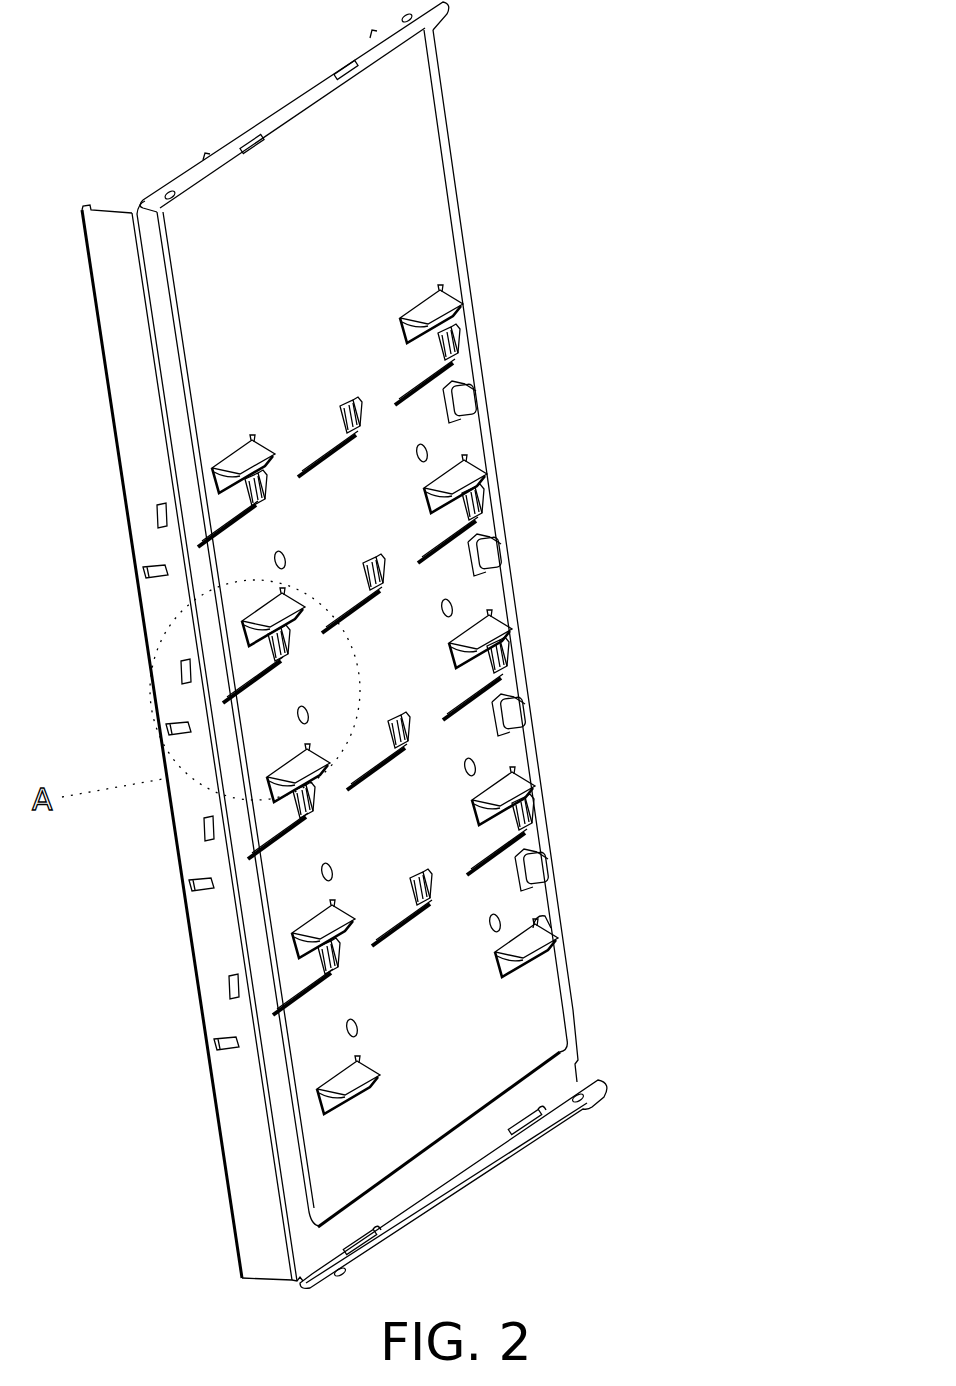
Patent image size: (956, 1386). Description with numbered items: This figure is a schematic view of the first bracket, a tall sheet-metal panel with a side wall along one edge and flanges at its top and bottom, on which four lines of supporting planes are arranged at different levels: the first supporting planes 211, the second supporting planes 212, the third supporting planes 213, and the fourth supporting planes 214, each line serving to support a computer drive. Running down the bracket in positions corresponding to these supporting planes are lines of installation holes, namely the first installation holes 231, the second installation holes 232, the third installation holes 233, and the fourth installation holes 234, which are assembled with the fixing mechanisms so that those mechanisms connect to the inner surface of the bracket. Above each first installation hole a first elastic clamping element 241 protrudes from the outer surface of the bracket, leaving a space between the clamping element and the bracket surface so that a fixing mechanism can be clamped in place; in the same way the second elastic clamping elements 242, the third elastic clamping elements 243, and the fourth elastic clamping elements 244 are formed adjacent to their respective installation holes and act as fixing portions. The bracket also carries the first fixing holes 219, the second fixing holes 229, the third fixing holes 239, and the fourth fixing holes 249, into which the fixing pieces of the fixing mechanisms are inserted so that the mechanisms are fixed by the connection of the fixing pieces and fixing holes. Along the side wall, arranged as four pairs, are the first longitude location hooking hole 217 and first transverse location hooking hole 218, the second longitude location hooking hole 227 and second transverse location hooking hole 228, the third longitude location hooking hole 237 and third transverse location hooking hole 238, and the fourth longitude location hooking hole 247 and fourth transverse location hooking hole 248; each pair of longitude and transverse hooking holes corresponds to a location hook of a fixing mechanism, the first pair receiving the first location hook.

The first supporting planes 211 is at (483, 462).
The second supporting planes 212 is at (507, 617).
The third supporting planes 213 is at (533, 772).
The fourth supporting planes 214 is at (538, 937).
The first fixing holes 219 is at (457, 313).
The first longitude location hooking hole 217 is at (157, 515).
The first transverse location hooking hole 218 is at (152, 578).
The second longitude location hooking hole 227 is at (182, 672).
The second transverse location hooking hole 228 is at (170, 730).
The third longitude location hooking hole 237 is at (205, 832).
The third transverse location hooking hole 238 is at (195, 888).
The fourth longitude location hooking hole 247 is at (232, 990).
The fourth transverse location hooking hole 248 is at (220, 1047).
The second fixing holes 229 is at (490, 540).
The third fixing holes 239 is at (523, 706).
The fourth fixing holes 249 is at (537, 920).
The first installation holes 231 is at (457, 358).
The second installation holes 232 is at (482, 517).
The third installation holes 233 is at (505, 668).
The fourth installation holes 234 is at (530, 833).
The first elastic clamping element 241 is at (470, 323).
The second elastic clamping elements 242 is at (480, 490).
The third elastic clamping elements 243 is at (497, 642).
The fourth elastic clamping elements 244 is at (528, 802).